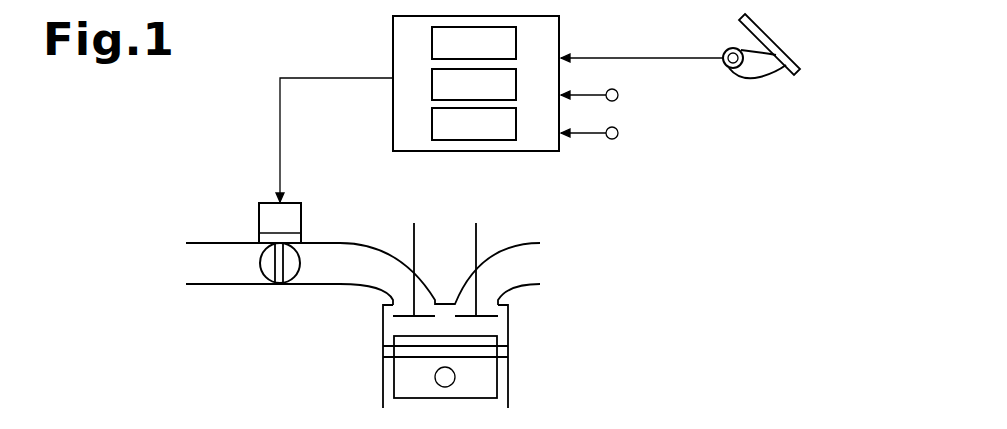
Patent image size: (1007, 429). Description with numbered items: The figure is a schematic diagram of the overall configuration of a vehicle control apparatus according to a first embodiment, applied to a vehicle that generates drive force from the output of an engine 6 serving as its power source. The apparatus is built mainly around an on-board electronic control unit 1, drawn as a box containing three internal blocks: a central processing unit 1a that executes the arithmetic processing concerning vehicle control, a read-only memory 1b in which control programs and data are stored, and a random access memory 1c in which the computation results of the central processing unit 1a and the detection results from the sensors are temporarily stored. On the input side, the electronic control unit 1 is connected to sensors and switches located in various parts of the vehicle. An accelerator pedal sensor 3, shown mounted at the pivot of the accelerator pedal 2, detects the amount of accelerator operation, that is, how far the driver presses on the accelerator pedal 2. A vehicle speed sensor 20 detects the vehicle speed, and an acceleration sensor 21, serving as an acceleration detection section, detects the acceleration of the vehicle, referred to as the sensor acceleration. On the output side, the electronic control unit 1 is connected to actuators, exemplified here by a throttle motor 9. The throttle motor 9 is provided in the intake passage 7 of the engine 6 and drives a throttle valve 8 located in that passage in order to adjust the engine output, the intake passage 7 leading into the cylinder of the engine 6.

The electronic control unit 1 is at (561, 30).
The central processing unit 1a is at (518, 43).
The read-only memory 1b is at (518, 84).
The random access memory 1c is at (518, 124).
The accelerator pedal 2 is at (773, 42).
The accelerator pedal sensor 3 is at (726, 40).
The engine 6 is at (509, 375).
The intake passage 7 is at (309, 285).
The throttle valve 8 is at (301, 263).
The throttle motor 9 is at (302, 216).
The vehicle speed sensor 20 is at (619, 95).
The acceleration sensor 21 is at (619, 133).